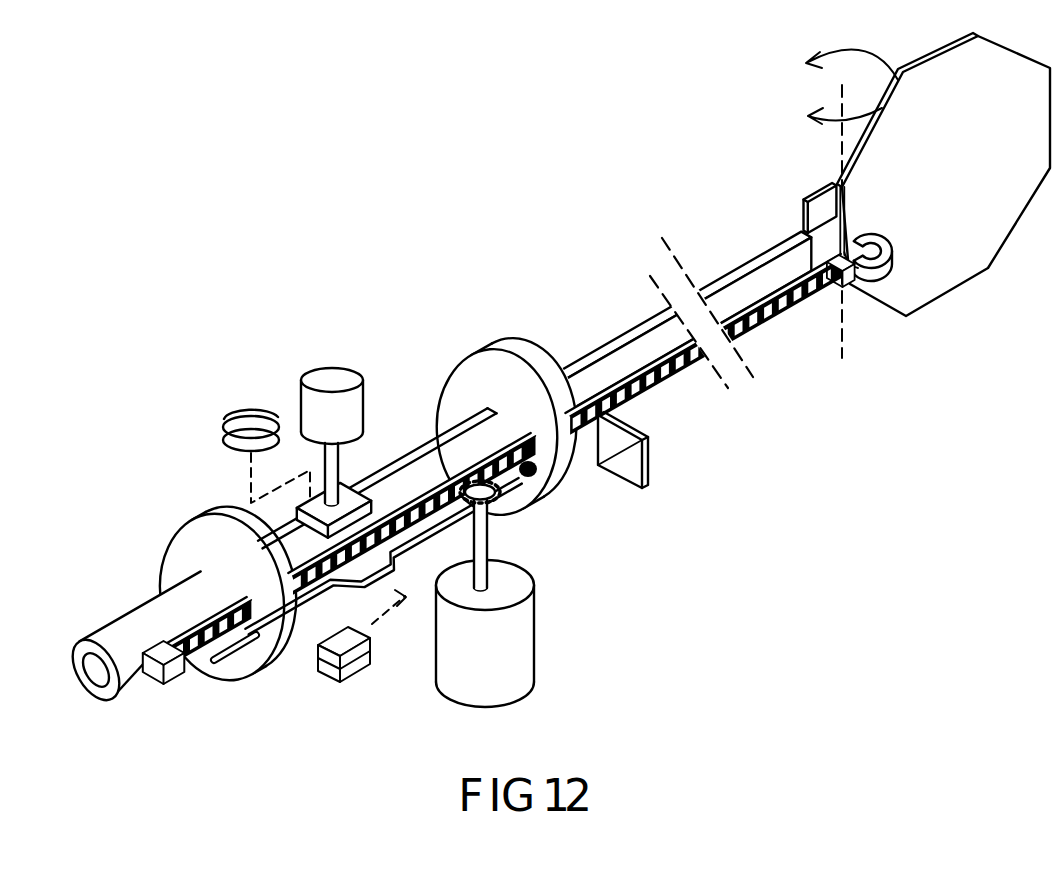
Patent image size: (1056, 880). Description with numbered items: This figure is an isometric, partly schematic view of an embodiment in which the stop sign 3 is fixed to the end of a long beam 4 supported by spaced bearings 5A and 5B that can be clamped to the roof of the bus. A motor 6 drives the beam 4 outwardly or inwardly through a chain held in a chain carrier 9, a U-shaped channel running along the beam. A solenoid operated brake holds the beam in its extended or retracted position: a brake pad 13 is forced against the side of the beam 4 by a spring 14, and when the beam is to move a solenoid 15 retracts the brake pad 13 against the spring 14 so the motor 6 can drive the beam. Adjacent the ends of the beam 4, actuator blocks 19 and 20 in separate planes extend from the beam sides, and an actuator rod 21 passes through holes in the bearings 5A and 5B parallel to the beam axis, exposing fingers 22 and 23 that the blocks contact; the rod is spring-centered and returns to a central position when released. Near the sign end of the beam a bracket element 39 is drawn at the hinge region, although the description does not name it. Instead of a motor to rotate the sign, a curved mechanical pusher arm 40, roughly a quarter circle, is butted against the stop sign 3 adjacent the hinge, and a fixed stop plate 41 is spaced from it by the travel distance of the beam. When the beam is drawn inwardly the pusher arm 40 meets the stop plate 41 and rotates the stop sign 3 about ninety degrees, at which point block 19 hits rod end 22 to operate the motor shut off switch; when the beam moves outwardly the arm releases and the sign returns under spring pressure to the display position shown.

The stop sign 3 is at (968, 277).
The beam 4 is at (638, 323).
The bearing 5A is at (503, 350).
The bearing 5B is at (192, 520).
The motor 6 is at (527, 615).
The chain carrier 9 is at (613, 372).
The brake pad 13 is at (356, 492).
The spring 14 is at (248, 405).
The solenoid 15 is at (313, 367).
The actuator block 19 is at (841, 330).
The actuator block 20 is at (177, 685).
The actuator rod 21 is at (490, 536).
The finger 22 is at (632, 490).
The finger 23 is at (233, 643).
The bracket 39 is at (843, 187).
The pusher arm 40 is at (884, 278).
The stop plate 41 is at (647, 467).